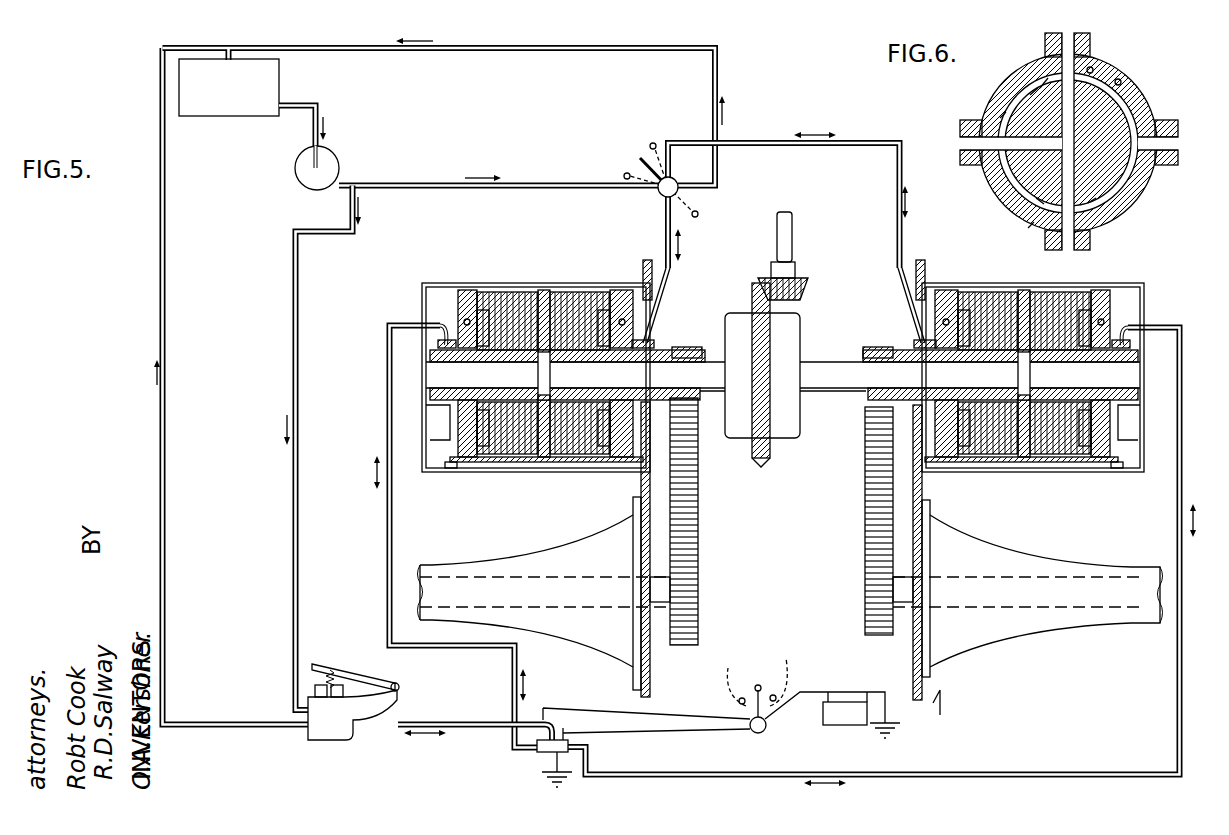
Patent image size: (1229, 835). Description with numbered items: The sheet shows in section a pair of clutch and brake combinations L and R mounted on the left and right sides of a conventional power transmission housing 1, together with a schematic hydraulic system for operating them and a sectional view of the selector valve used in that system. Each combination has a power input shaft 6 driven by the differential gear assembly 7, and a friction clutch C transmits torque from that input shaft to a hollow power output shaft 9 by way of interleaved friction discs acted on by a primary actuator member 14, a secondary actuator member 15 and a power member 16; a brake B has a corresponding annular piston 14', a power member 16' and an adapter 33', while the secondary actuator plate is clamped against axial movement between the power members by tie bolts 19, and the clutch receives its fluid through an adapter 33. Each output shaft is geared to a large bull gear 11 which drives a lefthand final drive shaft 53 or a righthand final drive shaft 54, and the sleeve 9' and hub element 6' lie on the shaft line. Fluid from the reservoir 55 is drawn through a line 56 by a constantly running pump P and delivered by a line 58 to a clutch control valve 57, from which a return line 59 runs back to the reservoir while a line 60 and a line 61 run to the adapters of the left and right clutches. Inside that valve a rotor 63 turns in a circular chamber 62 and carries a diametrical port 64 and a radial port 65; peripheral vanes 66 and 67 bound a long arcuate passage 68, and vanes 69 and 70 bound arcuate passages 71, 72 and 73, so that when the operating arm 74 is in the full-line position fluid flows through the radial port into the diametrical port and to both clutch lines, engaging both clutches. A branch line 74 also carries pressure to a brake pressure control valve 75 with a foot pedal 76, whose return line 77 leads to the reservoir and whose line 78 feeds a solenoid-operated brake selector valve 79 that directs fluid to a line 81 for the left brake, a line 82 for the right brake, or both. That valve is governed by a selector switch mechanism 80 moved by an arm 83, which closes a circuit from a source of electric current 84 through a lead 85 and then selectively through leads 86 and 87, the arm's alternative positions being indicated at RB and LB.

In FIG. 5, the power transmission housing 1 is at (461, 283).
In FIG. 5, the power input shaft 6 is at (783, 353).
In FIG. 5, the hub post 6' is at (784, 375).
In FIG. 5, the differential gear assembly 7 is at (795, 330).
In FIG. 5, the power output member or hollow shaft 9 is at (782, 336).
In FIG. 5, the sleeve 9' is at (784, 365).
In FIG. 5, the bull gear 11 is at (698, 497).
In FIG. 5, the primary actuator member 14 is at (790, 398).
In FIG. 5, the primary actuator member or annular piston 14' is at (792, 398).
In FIG. 5, the secondary actuator member 15 is at (536, 457).
In FIG. 5, the power member 16 is at (797, 472).
In FIG. 5, the power member 16' is at (440, 453).
In FIG. 5, the tie bolts 19 is at (560, 462).
In FIG. 5, the adapter 33 is at (784, 322).
In FIG. 5, the adapter 33' is at (786, 320).
In FIG. 5, the lefthand final drive shaft 53 is at (412, 575).
In FIG. 5, the righthand final drive shaft 54 is at (1152, 575).
In FIG. 5, the reservoir 55 is at (282, 72).
In FIG. 5, the line 56 is at (318, 108).
In FIG. 5, the clutch control valve 57 is at (678, 181).
In FIG. 6, the clutch control valve 57 is at (1150, 92).
In FIG. 5, the line 58 is at (545, 185).
In FIG. 6, the line 58 is at (965, 150).
In FIG. 5, the return line 59 is at (560, 52).
In FIG. 6, the return line 59 is at (1158, 128).
In FIG. 5, the line 60 is at (664, 220).
In FIG. 6, the line 60 is at (1092, 247).
In FIG. 5, the line 61 is at (838, 148).
In FIG. 6, the line 61 is at (1076, 38).
In FIG. 6, the circular chamber 62 is at (1120, 80).
In FIG. 6, the rotor 63 is at (1068, 180).
In FIG. 6, the diametrically extended passage or port 64 is at (1085, 190).
In FIG. 6, the radially extended passage or port 65 is at (1010, 183).
In FIG. 6, the vane 66 is at (1092, 67).
In FIG. 6, the vane 67 is at (1090, 204).
In FIG. 6, the arcuate passage 68 is at (1170, 147).
In FIG. 6, the vane 69 is at (1040, 92).
In FIG. 6, the vane 70 is at (1040, 200).
In FIG. 6, the arcuate passage 71 is at (1045, 62).
In FIG. 6, the arcuate passage 72 is at (1030, 232).
In FIG. 6, the arcuate passage 73 is at (1003, 115).
In FIG. 5, the operating arm 74 is at (299, 366).
In FIG. 5, the brake pressure control valve 75 is at (310, 745).
In FIG. 5, the foot pedal 76 is at (330, 672).
In FIG. 5, the return line 77 is at (166, 365).
In FIG. 5, the line 78 is at (449, 722).
In FIG. 5, the brake selector valve 79 is at (540, 755).
In FIG. 5, the selector switch mechanism 80 is at (758, 733).
In FIG. 5, the line 81 is at (387, 530).
In FIG. 5, the line 82 is at (978, 775).
In FIG. 5, the arm 83 is at (758, 686).
In FIG. 5, the source of electric current 84 is at (843, 710).
In FIG. 5, the lead 85 is at (832, 702).
In FIG. 5, the lead 86 is at (690, 733).
In FIG. 5, the lead 87 is at (690, 720).
In FIG. 5, the pump P is at (339, 170).
In FIG. 5, the brake B is at (497, 286).
In FIG. 5, the friction clutch means C is at (583, 286).
In FIG. 5, the clutch and brake combination L is at (544, 286).
In FIG. 5, the clutch and brake combination R is at (1003, 286).
In FIG. 5, the right brake position RB is at (729, 678).
In FIG. 5, the left brake position LB is at (791, 676).